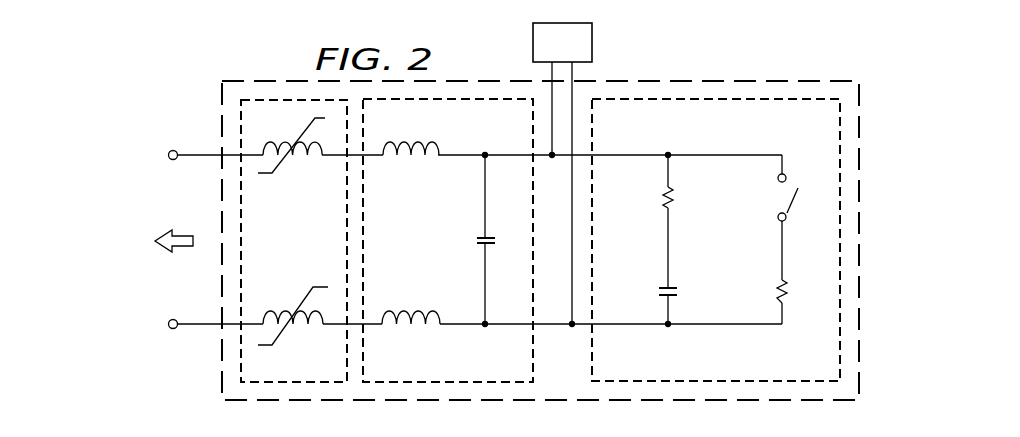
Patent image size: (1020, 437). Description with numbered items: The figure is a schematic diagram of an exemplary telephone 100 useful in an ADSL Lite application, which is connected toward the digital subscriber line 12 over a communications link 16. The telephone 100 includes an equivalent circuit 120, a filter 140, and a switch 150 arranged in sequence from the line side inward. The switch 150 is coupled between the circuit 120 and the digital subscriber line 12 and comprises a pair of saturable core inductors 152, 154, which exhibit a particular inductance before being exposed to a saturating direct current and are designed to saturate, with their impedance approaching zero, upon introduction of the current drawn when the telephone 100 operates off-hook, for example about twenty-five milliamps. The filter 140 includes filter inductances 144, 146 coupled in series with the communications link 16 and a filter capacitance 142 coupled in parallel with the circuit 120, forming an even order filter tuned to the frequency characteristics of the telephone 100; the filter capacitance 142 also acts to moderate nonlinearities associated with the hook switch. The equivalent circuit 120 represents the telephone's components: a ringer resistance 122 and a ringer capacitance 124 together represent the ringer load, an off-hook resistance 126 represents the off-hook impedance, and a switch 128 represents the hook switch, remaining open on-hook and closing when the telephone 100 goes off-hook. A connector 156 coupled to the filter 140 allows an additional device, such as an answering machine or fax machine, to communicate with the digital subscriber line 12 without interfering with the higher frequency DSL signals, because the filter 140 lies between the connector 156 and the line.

The telephone 100 is at (815, 80).
The communications link 16 is at (172, 131).
The digital subscriber line 12 is at (145, 247).
The switch 150 is at (325, 368).
The saturable core inductor 152 is at (298, 163).
The saturable core inductor 154 is at (289, 299).
The filter 140 is at (503, 137).
The filter capacitance 142 is at (477, 240).
The filter inductance 144 is at (420, 162).
The filter inductance 146 is at (421, 330).
The connector 156 is at (533, 42).
The equivalent circuit 120 is at (733, 137).
The ringer resistance 122 is at (663, 190).
The ringer capacitance 124 is at (659, 294).
The off-hook resistance 126 is at (776, 292).
The switch 128 is at (778, 198).